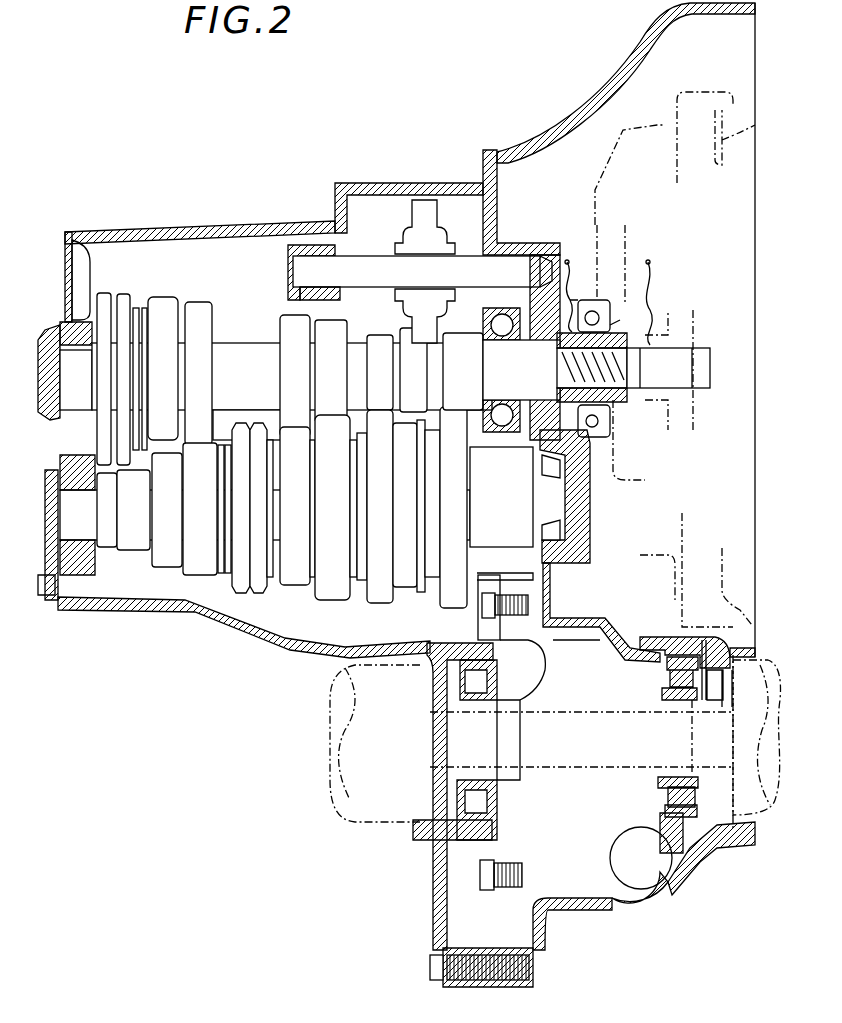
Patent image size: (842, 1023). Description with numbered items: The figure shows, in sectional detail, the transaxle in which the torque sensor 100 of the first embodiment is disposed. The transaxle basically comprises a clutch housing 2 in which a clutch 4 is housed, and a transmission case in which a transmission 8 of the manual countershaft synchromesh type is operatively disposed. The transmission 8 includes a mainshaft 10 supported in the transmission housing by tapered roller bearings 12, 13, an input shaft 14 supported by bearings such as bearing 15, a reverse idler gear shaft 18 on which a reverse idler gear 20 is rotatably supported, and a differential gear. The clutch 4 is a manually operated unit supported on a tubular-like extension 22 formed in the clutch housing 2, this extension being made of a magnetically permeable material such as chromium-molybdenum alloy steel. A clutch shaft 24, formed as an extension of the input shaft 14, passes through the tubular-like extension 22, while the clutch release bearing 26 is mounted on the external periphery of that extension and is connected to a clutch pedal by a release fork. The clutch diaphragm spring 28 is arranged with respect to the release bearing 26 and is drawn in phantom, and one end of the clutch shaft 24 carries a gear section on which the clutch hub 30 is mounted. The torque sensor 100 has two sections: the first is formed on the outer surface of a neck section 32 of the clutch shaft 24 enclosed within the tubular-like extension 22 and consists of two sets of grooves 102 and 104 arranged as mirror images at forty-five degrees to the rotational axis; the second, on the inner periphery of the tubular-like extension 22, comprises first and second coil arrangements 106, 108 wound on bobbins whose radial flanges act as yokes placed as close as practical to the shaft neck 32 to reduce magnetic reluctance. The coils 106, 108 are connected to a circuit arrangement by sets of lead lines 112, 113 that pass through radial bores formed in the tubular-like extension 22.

The clutch housing 2 is at (647, 48).
The clutch 4 is at (603, 148).
The transmission 8 is at (190, 290).
The mainshaft 10 is at (72, 514).
The tapered roller bearing 12 is at (68, 480).
The tapered roller bearing 13 is at (560, 535).
The input shaft 14 is at (248, 360).
The bearing 15 is at (75, 348).
The reverse idler gear shaft 18 is at (360, 272).
The reverse idler gear 20 is at (418, 217).
The tubular-like extension 22 is at (620, 402).
The clutch shaft 24 is at (690, 366).
The clutch release bearing 26 is at (592, 312).
The clutch diaphragm spring 28 is at (620, 300).
The clutch hub 30 is at (695, 318).
The neck section 32 is at (625, 366).
The torque sensor 100 is at (630, 408).
The set of grooves 102 is at (550, 370).
The set of grooves 104 is at (640, 386).
The first coil arrangement 106 is at (520, 352).
The second coil arrangement 108 is at (632, 342).
The lead lines 112 is at (565, 262).
The lead lines 113 is at (650, 262).